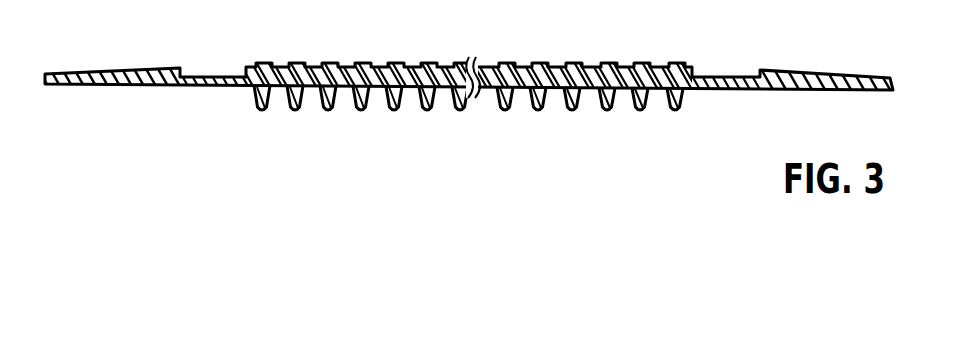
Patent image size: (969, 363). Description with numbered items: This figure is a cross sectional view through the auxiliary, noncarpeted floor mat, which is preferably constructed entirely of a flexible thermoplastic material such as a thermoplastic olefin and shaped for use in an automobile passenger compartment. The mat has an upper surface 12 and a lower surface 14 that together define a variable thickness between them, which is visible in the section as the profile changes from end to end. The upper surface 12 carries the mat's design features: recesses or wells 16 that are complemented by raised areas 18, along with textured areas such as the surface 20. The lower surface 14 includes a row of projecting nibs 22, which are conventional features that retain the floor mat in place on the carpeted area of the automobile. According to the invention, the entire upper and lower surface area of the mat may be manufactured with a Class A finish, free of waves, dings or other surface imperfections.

The upper surface 12 is at (270, 68).
The lower surface 14 is at (238, 86).
The recesses or wells 16 is at (710, 76).
The raised areas 18 is at (540, 68).
The textured surface 20 is at (800, 71).
The projecting nibs 22 is at (572, 100).